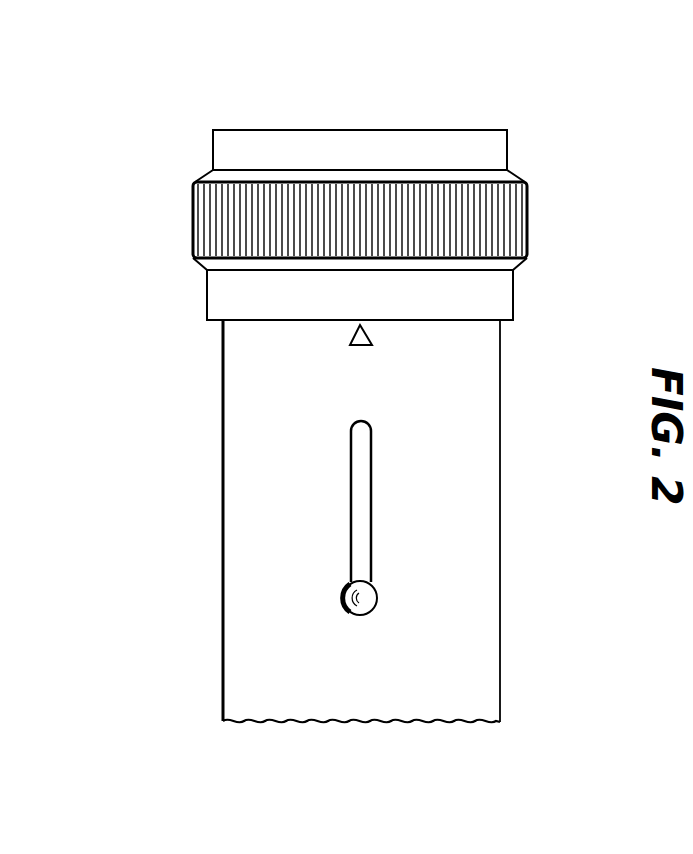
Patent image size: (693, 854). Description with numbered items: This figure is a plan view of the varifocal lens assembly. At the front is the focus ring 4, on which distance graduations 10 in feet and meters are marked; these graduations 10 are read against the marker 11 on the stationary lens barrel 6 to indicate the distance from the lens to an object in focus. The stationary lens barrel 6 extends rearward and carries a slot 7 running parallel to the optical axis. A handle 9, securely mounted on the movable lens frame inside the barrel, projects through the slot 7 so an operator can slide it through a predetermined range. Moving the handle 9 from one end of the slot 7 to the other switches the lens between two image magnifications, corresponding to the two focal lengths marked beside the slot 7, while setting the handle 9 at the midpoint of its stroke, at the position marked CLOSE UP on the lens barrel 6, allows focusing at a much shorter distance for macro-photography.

The focus ring 4 is at (498, 212).
The graduations 10 is at (205, 292).
The marker 11 is at (360, 345).
The slot 7 is at (352, 495).
The stationary lens barrel 6 is at (343, 603).
The handle 9 is at (485, 695).